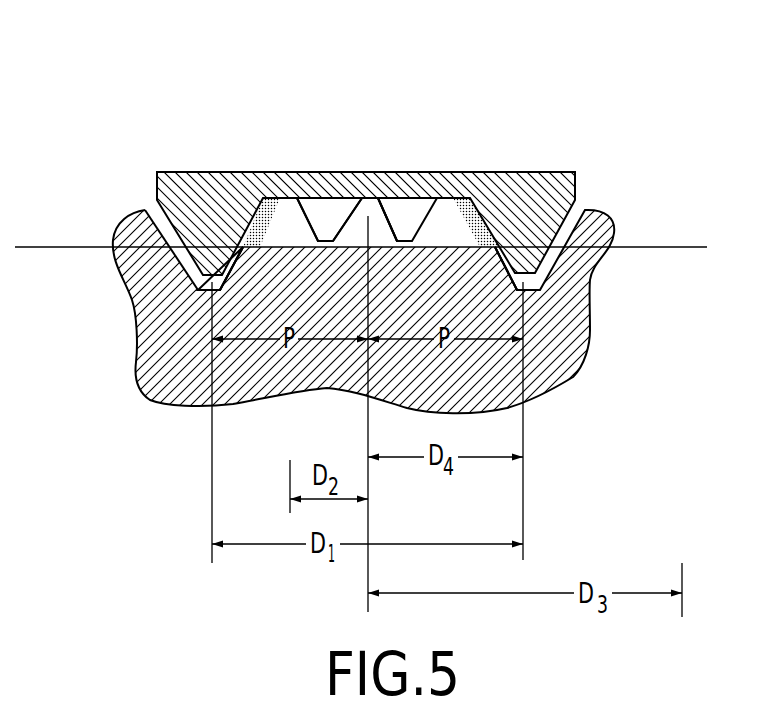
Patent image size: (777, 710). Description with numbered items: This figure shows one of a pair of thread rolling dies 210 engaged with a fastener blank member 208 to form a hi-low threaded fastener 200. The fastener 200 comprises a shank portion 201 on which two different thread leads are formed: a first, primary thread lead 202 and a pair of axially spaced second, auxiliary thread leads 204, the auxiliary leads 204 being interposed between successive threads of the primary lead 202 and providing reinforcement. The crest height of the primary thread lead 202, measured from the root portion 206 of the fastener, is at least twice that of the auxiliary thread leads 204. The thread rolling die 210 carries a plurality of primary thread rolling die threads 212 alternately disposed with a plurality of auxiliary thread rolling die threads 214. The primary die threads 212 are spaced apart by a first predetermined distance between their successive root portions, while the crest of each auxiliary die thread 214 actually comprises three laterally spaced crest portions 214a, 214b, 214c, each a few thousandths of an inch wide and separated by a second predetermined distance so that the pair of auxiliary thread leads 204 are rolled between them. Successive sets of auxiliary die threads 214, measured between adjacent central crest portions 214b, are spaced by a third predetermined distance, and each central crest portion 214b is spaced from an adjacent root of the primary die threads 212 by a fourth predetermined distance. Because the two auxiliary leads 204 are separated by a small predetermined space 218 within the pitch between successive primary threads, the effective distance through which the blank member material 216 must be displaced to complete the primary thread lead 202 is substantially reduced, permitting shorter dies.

The threaded fastener 200 is at (597, 154).
The shank portion 201 is at (297, 198).
The first, primary thread lead 202 is at (575, 202).
The second, auxiliary thread lead 204 is at (322, 208).
The root portion 206 is at (458, 203).
The fastener blank member 208 is at (147, 209).
The thread rolling die 210 is at (442, 394).
The primary thread rolling die thread 212 is at (147, 326).
The auxiliary thread rolling die thread 214 is at (323, 205).
The crest portion 214a is at (243, 250).
The central crest portion 214b is at (361, 197).
The crest portion 214c is at (448, 205).
The blank member material 216 is at (238, 198).
The predetermined distance or space 218 is at (371, 198).